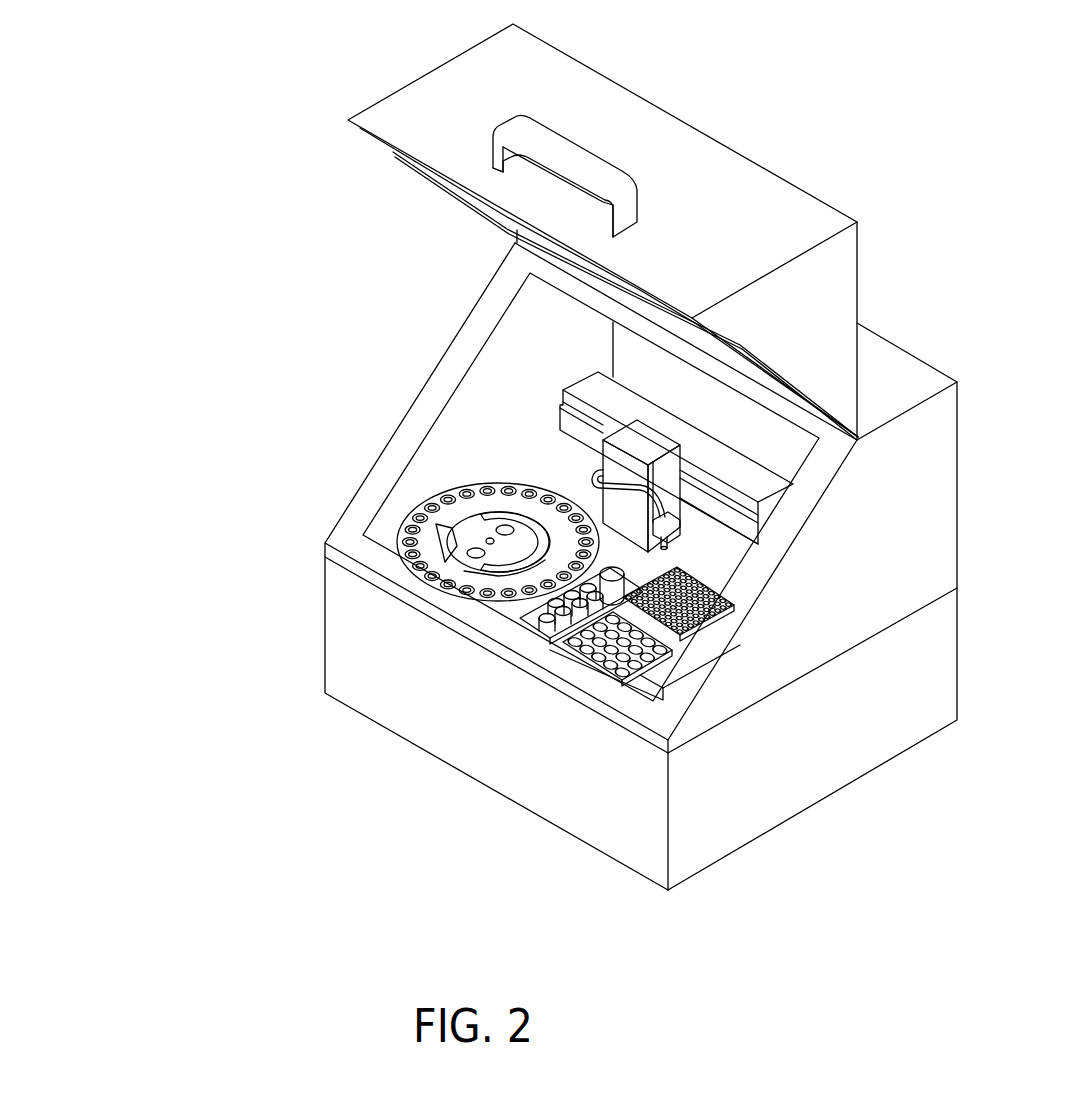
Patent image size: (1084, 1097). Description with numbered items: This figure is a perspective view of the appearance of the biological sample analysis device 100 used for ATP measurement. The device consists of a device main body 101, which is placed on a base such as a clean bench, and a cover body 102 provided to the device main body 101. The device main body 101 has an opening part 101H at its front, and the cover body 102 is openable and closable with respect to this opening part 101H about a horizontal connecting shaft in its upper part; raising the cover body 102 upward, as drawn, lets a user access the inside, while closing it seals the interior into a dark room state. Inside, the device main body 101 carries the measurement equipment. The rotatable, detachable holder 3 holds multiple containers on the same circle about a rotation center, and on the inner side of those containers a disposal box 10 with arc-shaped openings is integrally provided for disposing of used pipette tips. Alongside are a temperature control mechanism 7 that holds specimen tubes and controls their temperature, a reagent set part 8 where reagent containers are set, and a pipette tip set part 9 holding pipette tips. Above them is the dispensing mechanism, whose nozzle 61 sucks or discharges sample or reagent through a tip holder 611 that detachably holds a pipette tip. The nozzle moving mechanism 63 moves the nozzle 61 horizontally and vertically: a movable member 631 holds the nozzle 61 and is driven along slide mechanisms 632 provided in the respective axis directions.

The biological sample analysis device 100 is at (186, 203).
The device main body 101 is at (323, 622).
The cover body 102 is at (425, 74).
The opening part 101H is at (503, 324).
The disposal box 10 is at (412, 512).
The holder 3 is at (430, 562).
The temperature control mechanism 7 is at (580, 660).
The reagent set part 8 is at (512, 620).
The pipette tip set part 9 is at (675, 642).
The nozzle moving mechanism 63 is at (556, 448).
The slide mechanisms 632 is at (610, 392).
The movable member 631 is at (683, 528).
The nozzle 61 is at (672, 548).
The tip holder 611 is at (664, 543).